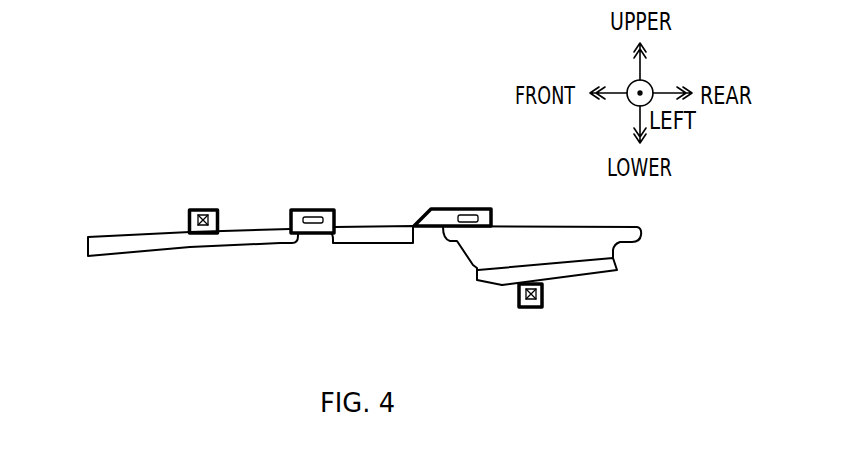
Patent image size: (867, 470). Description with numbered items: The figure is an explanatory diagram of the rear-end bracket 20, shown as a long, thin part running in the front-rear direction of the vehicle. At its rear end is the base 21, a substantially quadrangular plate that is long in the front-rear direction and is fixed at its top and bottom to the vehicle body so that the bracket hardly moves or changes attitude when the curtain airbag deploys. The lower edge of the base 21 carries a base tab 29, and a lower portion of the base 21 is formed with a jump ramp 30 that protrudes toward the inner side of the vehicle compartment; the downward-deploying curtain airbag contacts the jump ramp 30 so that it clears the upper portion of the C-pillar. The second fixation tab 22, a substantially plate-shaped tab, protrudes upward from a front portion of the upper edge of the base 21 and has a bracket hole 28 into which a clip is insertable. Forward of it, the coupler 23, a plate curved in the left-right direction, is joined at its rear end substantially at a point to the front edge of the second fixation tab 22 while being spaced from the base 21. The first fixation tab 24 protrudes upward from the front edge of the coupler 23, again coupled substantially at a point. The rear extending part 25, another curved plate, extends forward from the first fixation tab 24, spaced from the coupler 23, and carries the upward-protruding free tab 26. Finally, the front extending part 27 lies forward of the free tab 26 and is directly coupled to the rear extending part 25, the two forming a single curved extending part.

The rear-end bracket 20 is at (106, 190).
The base 21 is at (558, 237).
The second fixation tab 22 is at (463, 207).
The coupler 23 is at (371, 246).
The first fixation tab 24 is at (313, 207).
The rear extending part 25 is at (242, 248).
The free tab 26 is at (206, 207).
The front extending part 27 is at (134, 243).
The bracket hole 28 is at (190, 240).
The base tab 29 is at (545, 304).
The jump ramp 30 is at (550, 272).